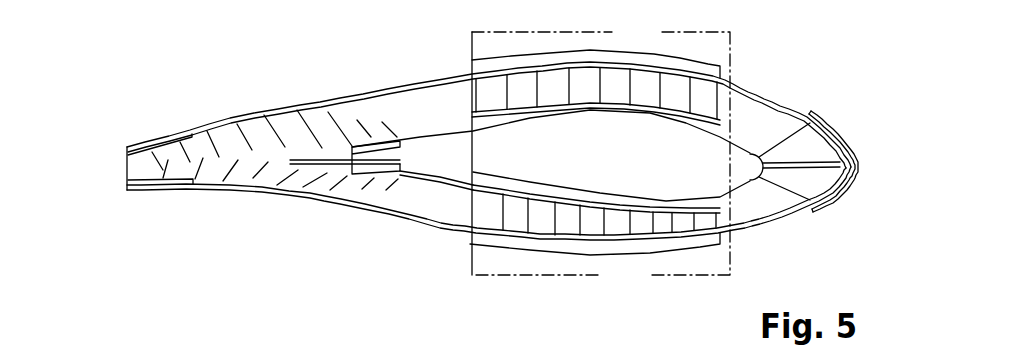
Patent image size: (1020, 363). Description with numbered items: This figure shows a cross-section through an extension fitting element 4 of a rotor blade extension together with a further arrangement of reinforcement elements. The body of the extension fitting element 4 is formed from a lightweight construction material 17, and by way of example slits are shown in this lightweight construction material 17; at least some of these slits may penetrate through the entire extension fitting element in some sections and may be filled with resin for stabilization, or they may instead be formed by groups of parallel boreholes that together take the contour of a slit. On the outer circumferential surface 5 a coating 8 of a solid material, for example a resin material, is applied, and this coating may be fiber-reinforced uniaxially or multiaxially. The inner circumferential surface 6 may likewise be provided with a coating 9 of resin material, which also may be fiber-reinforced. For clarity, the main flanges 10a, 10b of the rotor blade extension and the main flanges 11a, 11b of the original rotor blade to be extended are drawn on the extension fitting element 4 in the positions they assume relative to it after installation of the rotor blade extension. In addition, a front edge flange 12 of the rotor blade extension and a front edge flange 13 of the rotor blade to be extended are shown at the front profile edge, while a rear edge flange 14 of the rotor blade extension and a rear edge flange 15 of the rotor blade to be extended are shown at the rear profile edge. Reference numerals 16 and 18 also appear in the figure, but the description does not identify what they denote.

The extension fitting element 4 is at (125, 161).
The outer circumferential surface 5 is at (428, 78).
The inner circumferential surface 6 is at (428, 175).
The coating 8 is at (353, 207).
The coating 9 is at (446, 180).
The main flange of the rotor blade extension 10a is at (667, 54).
The main flange of the rotor blade extension 10b is at (661, 246).
The main flange of the original rotor blade 11a is at (666, 118).
The main flange of the original rotor blade 11b is at (666, 202).
The front edge flange of the rotor blade extension 12 is at (838, 141).
The front edge flange of the rotor blade to be extended 13 is at (755, 160).
The rear edge flange of the rotor blade extension 14 is at (165, 132).
The rear edge flange of the rotor blade to be extended 15 is at (399, 142).
The shear web 16 is at (503, 214).
The lightweight construction material 17 is at (410, 202).
The spar cap region 18 is at (741, 44).